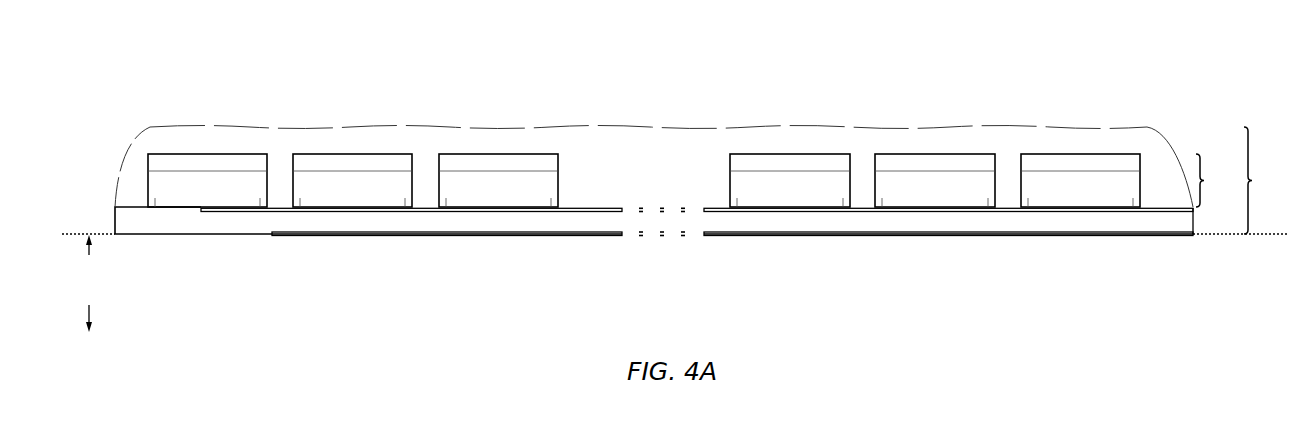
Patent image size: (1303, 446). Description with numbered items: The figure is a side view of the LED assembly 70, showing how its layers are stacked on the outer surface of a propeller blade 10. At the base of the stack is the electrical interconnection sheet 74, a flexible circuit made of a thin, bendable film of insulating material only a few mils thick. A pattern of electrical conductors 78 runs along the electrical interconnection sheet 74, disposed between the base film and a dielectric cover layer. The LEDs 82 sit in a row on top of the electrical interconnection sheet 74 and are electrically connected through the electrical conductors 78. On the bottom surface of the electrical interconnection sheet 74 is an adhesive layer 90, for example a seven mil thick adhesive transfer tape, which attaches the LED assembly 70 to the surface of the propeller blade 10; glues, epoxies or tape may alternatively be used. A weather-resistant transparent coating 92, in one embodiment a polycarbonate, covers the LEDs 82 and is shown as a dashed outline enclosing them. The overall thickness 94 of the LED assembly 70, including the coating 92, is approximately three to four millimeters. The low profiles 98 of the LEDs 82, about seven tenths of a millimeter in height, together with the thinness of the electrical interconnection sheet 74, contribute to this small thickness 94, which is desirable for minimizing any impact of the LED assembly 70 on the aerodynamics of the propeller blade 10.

The LED assembly 70 is at (567, 34).
The electrical interconnection sheet 74 is at (153, 230).
The electrical conductors 78 is at (598, 209).
The LEDs 82 is at (194, 154).
The adhesive layer 90 is at (460, 233).
The weather-resistant transparent coating 92 is at (815, 128).
The thickness 94 is at (1267, 180).
The low profiles 98 is at (1216, 180).
The propeller blade 10 is at (98, 292).